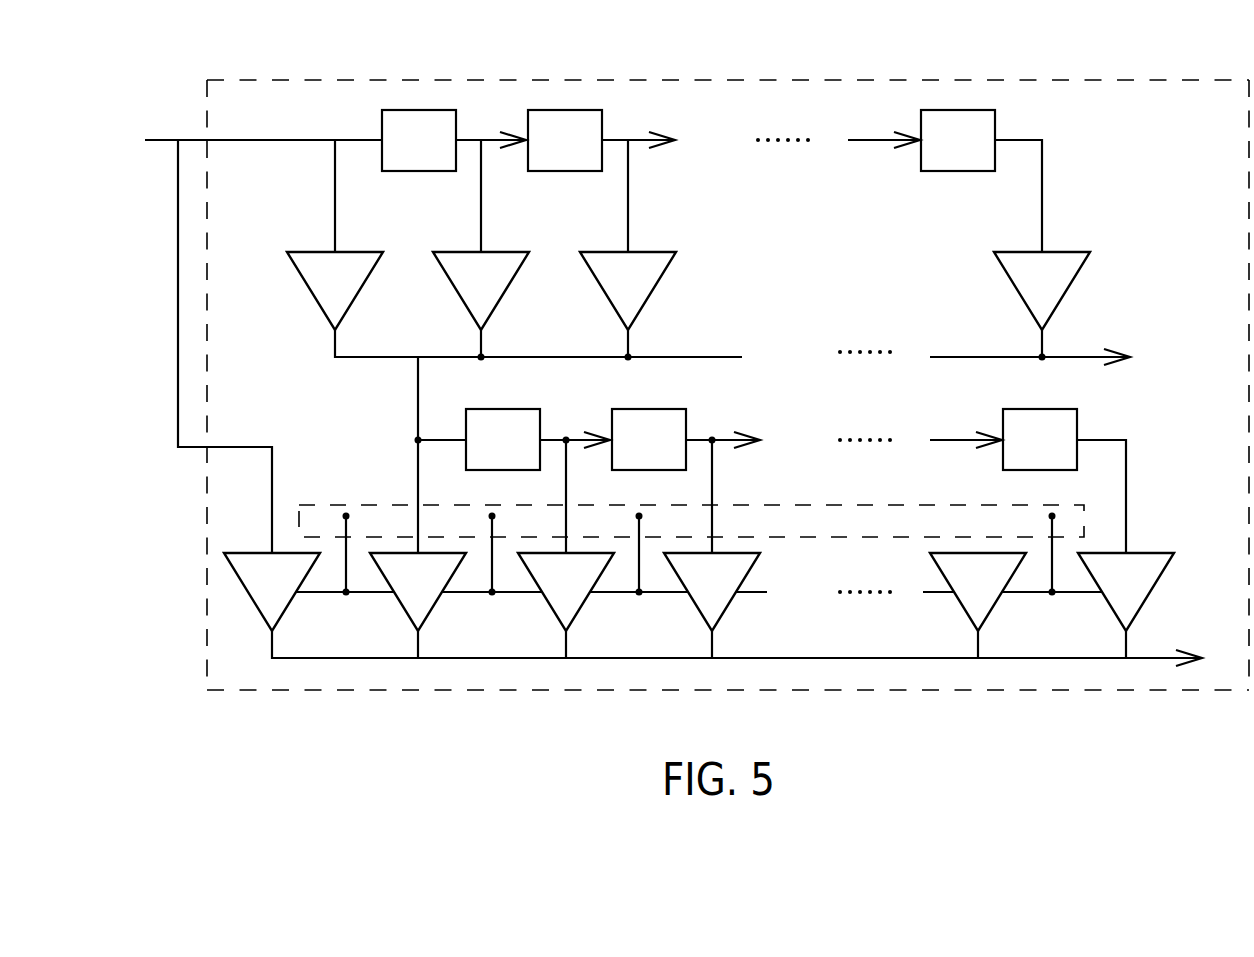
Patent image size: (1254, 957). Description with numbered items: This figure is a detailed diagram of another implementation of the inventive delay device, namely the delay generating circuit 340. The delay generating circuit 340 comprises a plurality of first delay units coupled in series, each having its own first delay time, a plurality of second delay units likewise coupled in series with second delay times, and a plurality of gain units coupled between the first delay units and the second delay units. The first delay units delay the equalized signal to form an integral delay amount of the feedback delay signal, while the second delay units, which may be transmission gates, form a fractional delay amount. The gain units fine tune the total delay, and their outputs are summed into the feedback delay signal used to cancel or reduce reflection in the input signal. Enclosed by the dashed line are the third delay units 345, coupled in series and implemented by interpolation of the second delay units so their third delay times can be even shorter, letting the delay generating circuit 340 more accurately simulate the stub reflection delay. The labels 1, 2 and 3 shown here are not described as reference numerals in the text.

The delay generating circuit 340 is at (712, 80).
The third delay units 345 is at (793, 505).
The delay element L1 1 is at (419, 140).
The delay element L2 2 is at (565, 140).
The transconductance amplifier Gm 3 is at (628, 291).